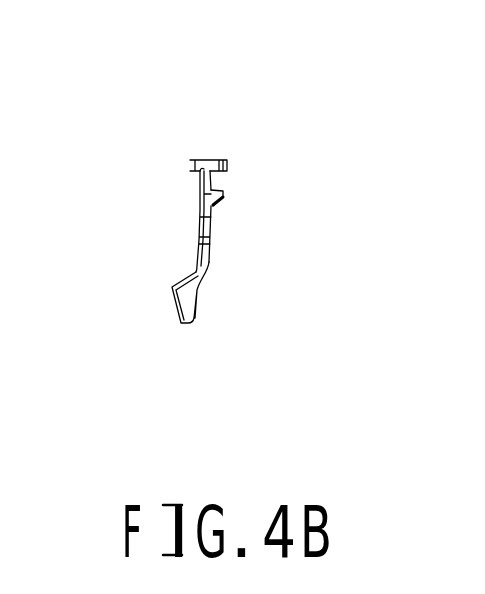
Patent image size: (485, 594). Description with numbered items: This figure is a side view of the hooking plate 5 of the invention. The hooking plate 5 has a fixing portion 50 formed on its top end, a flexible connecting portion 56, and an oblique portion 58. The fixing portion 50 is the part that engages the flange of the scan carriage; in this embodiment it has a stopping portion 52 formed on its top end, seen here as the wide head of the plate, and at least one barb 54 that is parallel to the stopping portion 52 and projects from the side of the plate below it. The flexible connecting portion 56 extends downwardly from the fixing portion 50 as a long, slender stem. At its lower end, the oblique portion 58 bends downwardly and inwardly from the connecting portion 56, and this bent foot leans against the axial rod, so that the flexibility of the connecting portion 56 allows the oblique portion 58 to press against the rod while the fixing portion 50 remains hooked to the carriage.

The hooking plate 5 is at (121, 111).
The fixing portion 50 is at (325, 133).
The stopping portion 52 is at (227, 165).
The barb 54 is at (223, 197).
The flexible connecting portion 56 is at (211, 240).
The oblique portion 58 is at (190, 303).